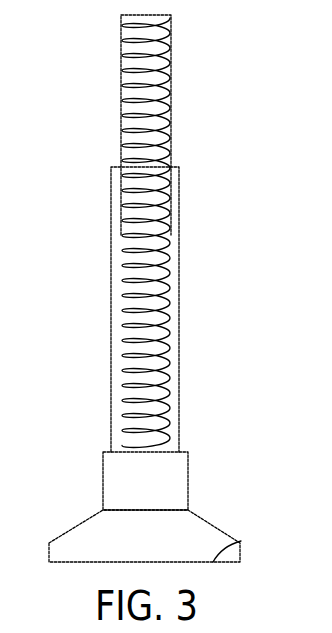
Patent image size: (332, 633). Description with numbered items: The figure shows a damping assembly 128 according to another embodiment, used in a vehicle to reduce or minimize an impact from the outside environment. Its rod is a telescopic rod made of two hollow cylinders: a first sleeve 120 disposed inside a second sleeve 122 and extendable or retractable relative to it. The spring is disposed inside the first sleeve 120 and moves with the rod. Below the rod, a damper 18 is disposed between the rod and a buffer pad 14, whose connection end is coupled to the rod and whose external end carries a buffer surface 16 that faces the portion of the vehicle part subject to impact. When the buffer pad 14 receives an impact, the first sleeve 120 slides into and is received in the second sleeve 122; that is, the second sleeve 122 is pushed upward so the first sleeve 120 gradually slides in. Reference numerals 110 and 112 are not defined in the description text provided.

The buffer pad 14 is at (212, 524).
The buffer surface 16 is at (241, 541).
The damper 18 is at (166, 474).
The spring assembly 110 is at (188, 233).
The spring 112 is at (158, 254).
The first sleeve 120 is at (171, 82).
The second sleeve 122 is at (181, 364).
The damping assembly 128 is at (190, 137).